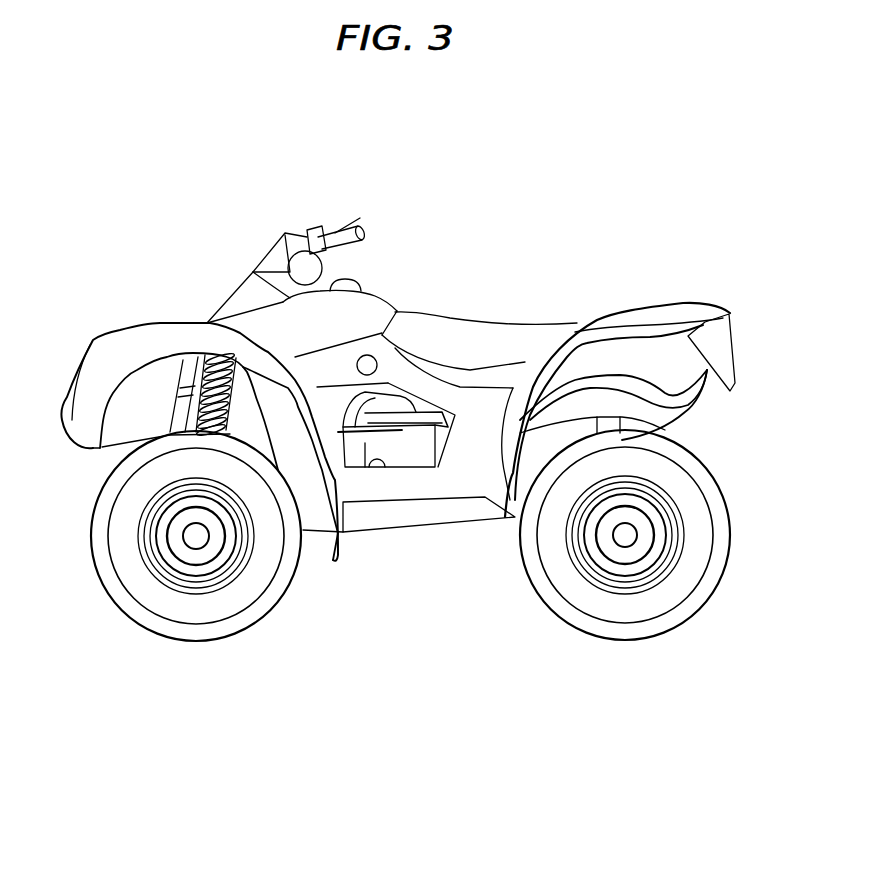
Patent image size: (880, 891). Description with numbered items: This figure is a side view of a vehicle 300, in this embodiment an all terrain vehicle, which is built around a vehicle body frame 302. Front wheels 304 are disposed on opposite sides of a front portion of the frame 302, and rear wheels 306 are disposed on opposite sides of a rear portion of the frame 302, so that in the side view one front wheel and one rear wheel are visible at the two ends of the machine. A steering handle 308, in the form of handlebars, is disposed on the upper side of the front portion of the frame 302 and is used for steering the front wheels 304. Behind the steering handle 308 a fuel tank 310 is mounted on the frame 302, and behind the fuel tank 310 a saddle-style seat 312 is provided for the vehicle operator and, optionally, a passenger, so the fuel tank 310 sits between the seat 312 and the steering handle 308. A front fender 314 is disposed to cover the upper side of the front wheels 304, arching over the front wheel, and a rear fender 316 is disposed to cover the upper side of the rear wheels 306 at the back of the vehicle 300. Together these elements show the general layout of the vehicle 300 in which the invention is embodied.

The vehicle 300 is at (650, 247).
The vehicle body frame 302 is at (570, 390).
The front wheels 304 is at (113, 600).
The rear wheels 306 is at (697, 610).
The steering handle 308 is at (275, 240).
The fuel tank 310 is at (375, 310).
The saddle-style seat 312 is at (468, 343).
The front fender 314 is at (88, 373).
The rear fender 316 is at (727, 341).